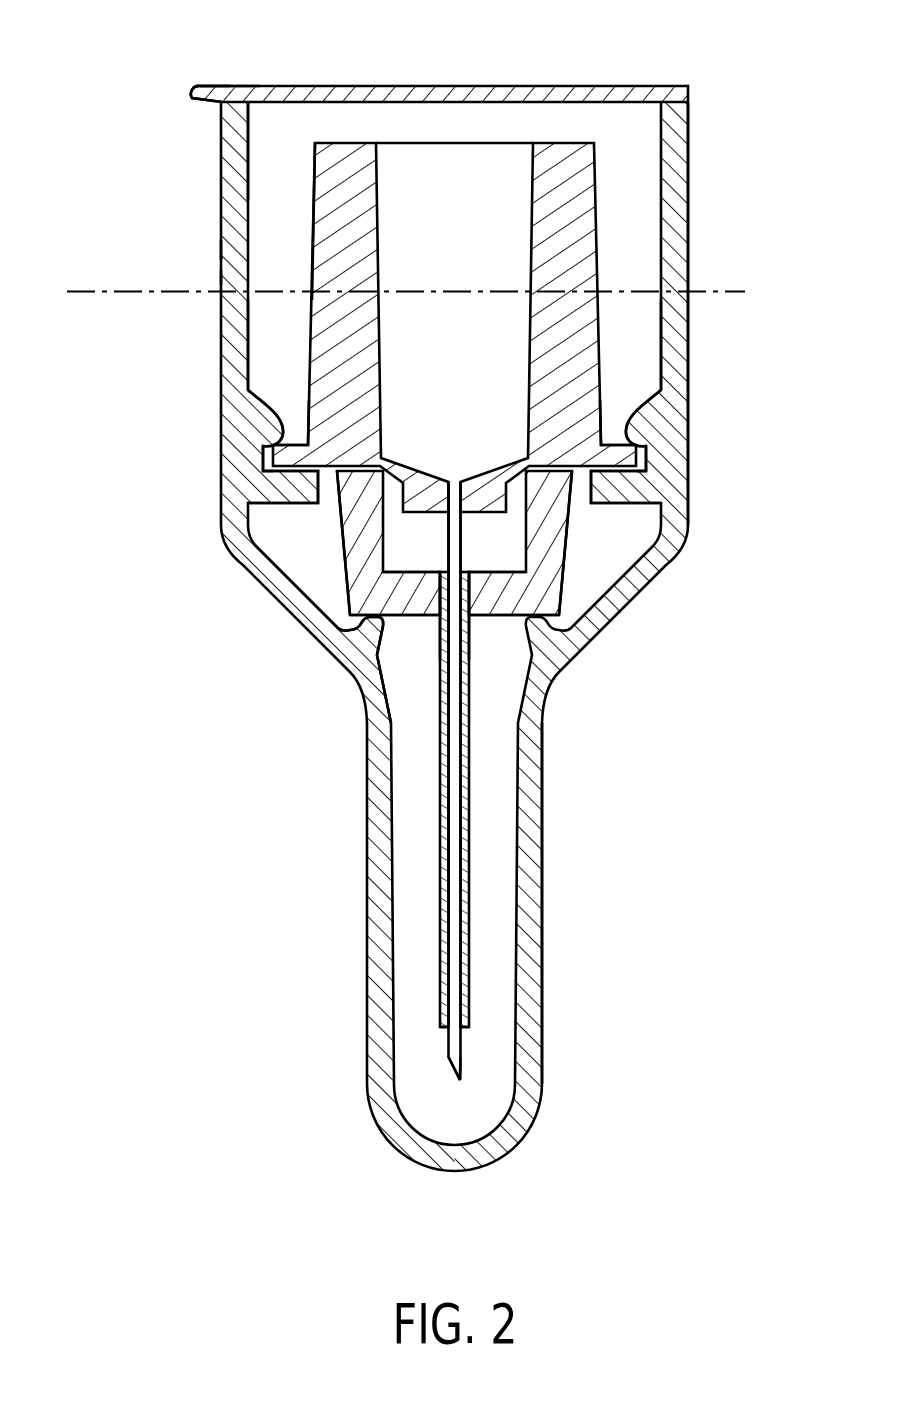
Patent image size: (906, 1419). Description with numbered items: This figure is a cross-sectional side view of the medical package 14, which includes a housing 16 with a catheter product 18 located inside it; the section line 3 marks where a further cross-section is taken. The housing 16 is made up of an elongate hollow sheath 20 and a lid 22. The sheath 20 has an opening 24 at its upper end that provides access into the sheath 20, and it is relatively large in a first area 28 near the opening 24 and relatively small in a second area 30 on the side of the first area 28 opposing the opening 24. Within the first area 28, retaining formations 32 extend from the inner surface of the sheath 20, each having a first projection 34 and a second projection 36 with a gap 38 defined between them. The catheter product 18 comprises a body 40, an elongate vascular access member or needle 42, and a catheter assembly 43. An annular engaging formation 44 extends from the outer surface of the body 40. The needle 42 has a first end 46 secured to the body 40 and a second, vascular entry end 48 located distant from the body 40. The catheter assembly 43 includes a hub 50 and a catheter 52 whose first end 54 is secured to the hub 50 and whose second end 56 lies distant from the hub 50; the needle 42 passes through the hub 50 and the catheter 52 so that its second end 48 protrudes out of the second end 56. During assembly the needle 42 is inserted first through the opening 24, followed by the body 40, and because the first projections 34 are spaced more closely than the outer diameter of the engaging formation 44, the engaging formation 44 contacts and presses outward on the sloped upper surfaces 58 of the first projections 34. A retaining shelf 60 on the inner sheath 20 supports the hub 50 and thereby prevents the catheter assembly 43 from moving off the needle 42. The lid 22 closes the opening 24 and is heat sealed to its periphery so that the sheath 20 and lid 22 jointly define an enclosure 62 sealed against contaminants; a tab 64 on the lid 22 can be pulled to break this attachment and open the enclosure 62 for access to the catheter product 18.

The section line 3- 3 is at (80, 290).
The medical package 14 is at (148, 88).
The housing 16 is at (182, 278).
The catheter product 18 is at (288, 256).
The elongate hollow sheath 20 is at (222, 357).
The lid 22 is at (386, 86).
The opening 24 is at (252, 117).
The first area 28 is at (735, 95).
The second area 30 is at (735, 703).
The retaining formation 32 is at (302, 298).
The first projection 34 is at (452, 409).
The second projection 36 is at (297, 495).
The gap 38 is at (265, 458).
The body 40 is at (590, 197).
The needle 42 is at (459, 683).
The catheter assembly 43 is at (338, 586).
The annular engaging formation 44 is at (258, 488).
The first end 46 is at (464, 542).
The vascular entry end 48 is at (462, 1058).
The hub 50 is at (557, 588).
The catheter 52 is at (471, 838).
The first end 54 is at (471, 628).
The second end 56 is at (472, 1008).
The sloped upper surface 58 is at (262, 405).
The retaining shelf 60 is at (380, 632).
The enclosure 62 is at (264, 204).
The tab 64 is at (207, 85).